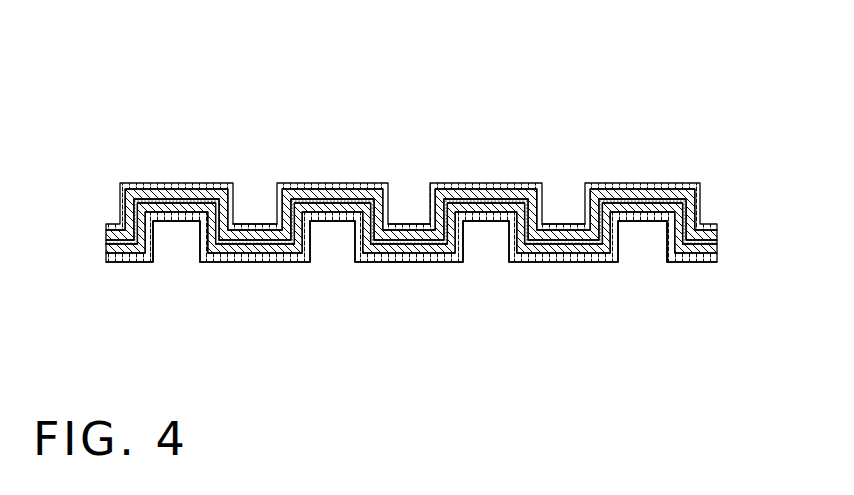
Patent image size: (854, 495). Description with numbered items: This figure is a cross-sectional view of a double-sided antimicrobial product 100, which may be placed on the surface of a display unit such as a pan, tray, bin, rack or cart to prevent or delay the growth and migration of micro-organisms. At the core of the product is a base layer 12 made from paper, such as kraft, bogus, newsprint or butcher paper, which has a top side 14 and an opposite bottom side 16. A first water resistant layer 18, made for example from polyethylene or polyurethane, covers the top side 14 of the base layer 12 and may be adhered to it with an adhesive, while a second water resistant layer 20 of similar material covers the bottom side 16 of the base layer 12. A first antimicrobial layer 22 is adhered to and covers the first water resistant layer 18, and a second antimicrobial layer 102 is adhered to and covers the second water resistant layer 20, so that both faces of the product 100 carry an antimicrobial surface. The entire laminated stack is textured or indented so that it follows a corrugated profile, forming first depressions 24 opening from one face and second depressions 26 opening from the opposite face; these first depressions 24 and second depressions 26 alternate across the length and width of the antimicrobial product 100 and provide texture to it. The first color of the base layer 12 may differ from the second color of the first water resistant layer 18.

The antimicrobial product 100 is at (420, 193).
The base layer 12 is at (237, 253).
The top side 14 is at (328, 190).
The bottom side 16 is at (562, 266).
The first water resistant layer 18 is at (212, 184).
The second water resistant layer 20 is at (276, 253).
The first antimicrobial layer 22 is at (142, 183).
The first depressions 24 is at (255, 174).
The second depressions 26 is at (178, 268).
The second antimicrobial layer 102 is at (410, 257).